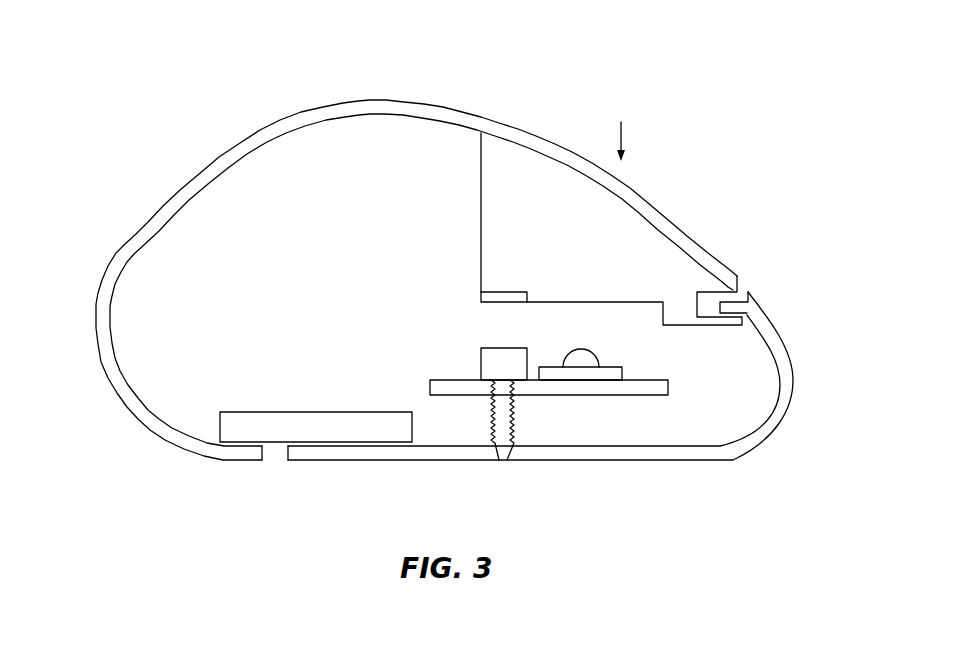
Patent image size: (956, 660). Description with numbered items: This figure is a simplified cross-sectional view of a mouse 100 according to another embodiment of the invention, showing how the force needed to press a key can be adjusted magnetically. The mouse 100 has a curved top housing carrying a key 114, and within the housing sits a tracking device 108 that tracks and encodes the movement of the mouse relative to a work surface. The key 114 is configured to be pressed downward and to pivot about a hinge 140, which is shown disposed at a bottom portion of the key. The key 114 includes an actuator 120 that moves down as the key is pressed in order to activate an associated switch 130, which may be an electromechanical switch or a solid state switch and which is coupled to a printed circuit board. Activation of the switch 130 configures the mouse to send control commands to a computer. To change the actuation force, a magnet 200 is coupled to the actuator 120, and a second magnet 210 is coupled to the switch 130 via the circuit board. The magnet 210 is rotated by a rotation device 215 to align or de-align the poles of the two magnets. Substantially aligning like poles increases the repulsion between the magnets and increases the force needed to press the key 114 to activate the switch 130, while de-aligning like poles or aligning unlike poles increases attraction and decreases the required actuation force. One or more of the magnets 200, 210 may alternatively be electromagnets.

The mouse 100 is at (132, 145).
The key 114 is at (628, 222).
The hinge 140 is at (462, 111).
The actuator 120 is at (636, 304).
The magnet 200 is at (481, 297).
The magnet 210 is at (481, 366).
The rotation device 215 is at (502, 462).
The switch 130 is at (582, 381).
The tracking device 108 is at (317, 412).